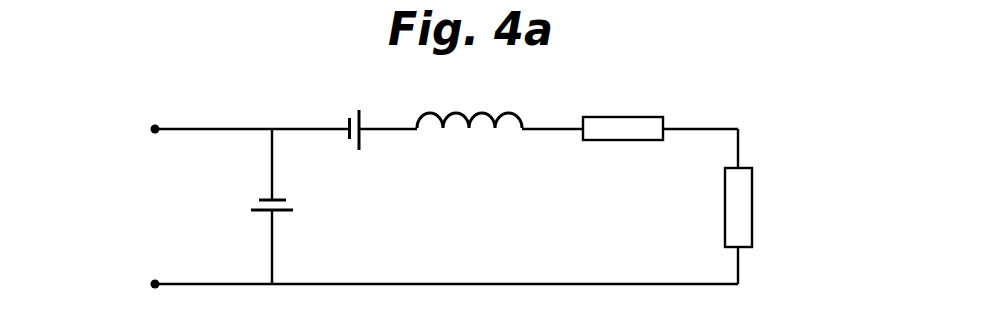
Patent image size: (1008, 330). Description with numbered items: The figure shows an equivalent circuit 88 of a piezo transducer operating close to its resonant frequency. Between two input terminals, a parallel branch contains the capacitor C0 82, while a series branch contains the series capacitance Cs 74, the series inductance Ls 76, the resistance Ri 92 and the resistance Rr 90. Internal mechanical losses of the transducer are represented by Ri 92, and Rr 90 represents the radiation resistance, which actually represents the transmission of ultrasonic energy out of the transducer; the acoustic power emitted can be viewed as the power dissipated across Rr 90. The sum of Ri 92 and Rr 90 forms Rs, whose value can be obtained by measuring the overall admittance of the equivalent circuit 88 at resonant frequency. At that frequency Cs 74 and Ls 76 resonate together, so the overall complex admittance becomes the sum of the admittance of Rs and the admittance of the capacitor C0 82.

The series capacitance Cs 74 is at (347, 126).
The series inductance Ls 76 is at (457, 112).
The capacitor C0 82 is at (268, 199).
The equivalent circuit 88 is at (740, 107).
The radiation resistance Rr 90 is at (752, 175).
The internal mechanical loss resistance Ri 92 is at (623, 116).